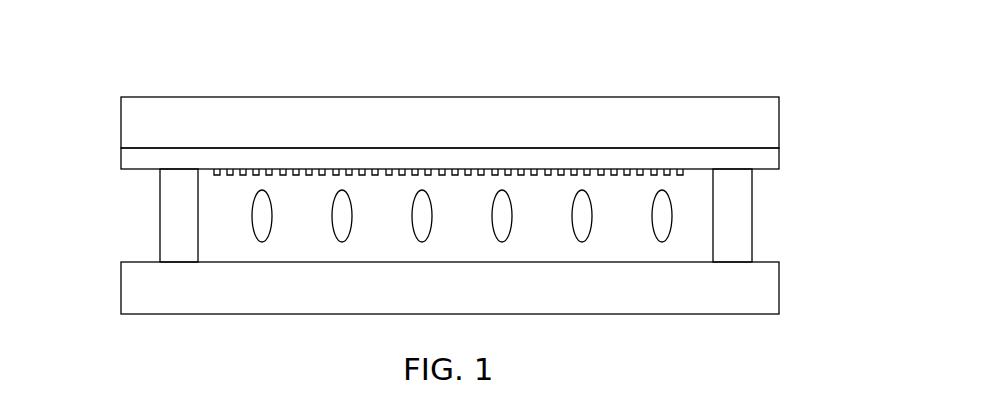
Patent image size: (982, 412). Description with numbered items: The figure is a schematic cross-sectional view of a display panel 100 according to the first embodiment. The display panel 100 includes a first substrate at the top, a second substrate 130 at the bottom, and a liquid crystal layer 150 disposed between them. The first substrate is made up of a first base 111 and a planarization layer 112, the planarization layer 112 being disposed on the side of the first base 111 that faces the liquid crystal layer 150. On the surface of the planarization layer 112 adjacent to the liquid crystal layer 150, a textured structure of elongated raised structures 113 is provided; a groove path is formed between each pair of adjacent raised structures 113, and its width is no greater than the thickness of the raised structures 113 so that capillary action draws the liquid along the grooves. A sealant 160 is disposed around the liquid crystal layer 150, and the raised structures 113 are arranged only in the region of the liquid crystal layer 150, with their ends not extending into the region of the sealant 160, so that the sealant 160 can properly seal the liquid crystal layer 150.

The display panel 100 is at (500, 38).
The first base 111 is at (772, 118).
The planarization layer 112 is at (770, 160).
The raised structures 113 is at (687, 173).
The second substrate 130 is at (762, 290).
The liquid crystal layer 150 is at (253, 225).
The sealant 160 is at (172, 189).